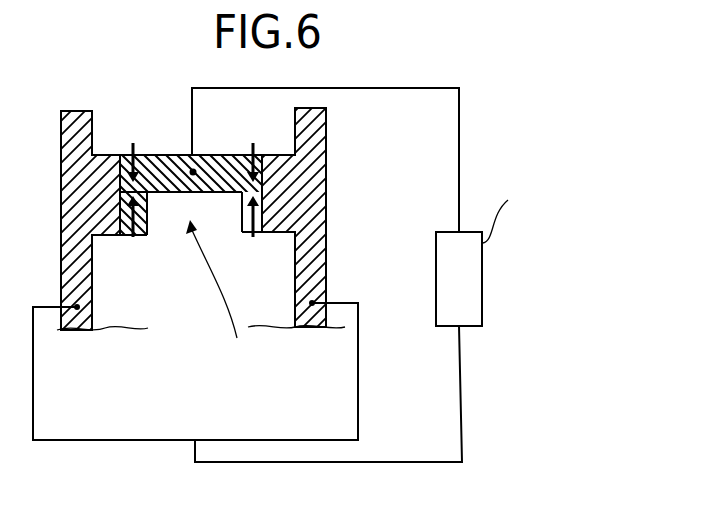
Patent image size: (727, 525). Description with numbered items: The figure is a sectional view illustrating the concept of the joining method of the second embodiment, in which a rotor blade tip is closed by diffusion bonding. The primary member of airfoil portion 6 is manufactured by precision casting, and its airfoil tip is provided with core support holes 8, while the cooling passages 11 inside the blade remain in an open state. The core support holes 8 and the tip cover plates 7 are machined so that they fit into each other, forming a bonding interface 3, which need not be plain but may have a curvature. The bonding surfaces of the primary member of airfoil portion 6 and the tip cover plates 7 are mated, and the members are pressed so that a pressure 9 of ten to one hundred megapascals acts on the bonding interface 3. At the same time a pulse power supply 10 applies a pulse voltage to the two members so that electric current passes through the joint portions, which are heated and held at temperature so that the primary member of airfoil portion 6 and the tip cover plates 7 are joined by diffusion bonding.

The bonding interface 3 is at (152, 155).
The primary member of airfoil portion 6 is at (80, 262).
The tip cover plates 7 is at (170, 155).
The core support holes 8 is at (217, 297).
The pressure 9 is at (130, 222).
The pulse power supply 10 is at (478, 285).
The cooling passages 11 is at (177, 290).